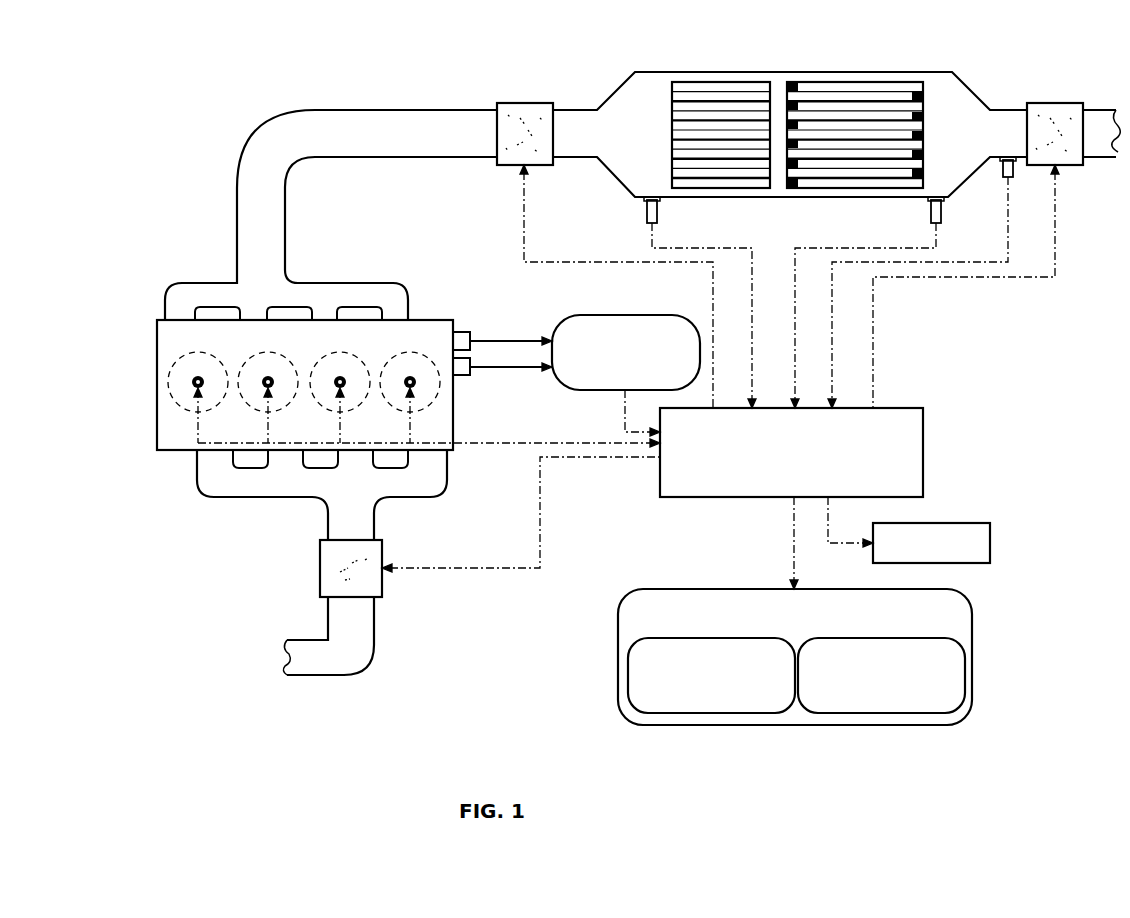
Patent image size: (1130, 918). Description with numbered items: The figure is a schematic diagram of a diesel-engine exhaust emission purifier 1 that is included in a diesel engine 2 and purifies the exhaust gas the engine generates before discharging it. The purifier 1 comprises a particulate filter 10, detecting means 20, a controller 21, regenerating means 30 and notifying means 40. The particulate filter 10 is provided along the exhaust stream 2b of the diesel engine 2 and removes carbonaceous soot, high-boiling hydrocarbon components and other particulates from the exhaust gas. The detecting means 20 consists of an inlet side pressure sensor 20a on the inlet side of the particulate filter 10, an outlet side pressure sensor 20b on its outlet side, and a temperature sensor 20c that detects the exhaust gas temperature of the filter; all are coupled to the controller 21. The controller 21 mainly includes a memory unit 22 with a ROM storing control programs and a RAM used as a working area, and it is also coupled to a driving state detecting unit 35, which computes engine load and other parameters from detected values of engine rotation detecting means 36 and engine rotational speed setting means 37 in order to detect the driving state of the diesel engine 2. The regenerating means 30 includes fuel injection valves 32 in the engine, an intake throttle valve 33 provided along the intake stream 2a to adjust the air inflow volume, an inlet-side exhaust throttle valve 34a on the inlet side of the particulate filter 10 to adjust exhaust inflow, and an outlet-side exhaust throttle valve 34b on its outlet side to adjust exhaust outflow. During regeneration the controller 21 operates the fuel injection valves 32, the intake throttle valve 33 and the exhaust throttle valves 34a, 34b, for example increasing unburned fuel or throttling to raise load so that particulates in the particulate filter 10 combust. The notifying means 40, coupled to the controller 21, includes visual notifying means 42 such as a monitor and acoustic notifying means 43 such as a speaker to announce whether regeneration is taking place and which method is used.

The diesel-engine exhaust emission purifier 1 is at (778, 36).
The diesel engine 2 is at (159, 392).
The intake stream 2a is at (328, 524).
The exhaust stream 2b is at (236, 246).
The particulate filter 10 is at (855, 72).
The detecting means 20 is at (904, 288).
The inlet side pressure sensor 20a is at (660, 214).
The outlet side pressure sensor 20b is at (926, 214).
The temperature sensor 20c is at (1000, 177).
The controller 21 is at (774, 406).
The memory unit 22 is at (990, 545).
The regenerating means 30 is at (556, 82).
The fuel injection valve 32 is at (410, 376).
The intake throttle valve 33 is at (320, 568).
The inlet-side exhaust throttle valve 34a is at (530, 103).
The outlet-side exhaust throttle valve 34b is at (1055, 103).
The driving state detecting unit 35 is at (620, 315).
The engine rotation detecting means 36 is at (468, 332).
The engine rotational speed setting means 37 is at (468, 378).
The notifying means 40 is at (972, 708).
The visual notifying means 42 is at (628, 680).
The acoustic notifying means 43 is at (965, 676).